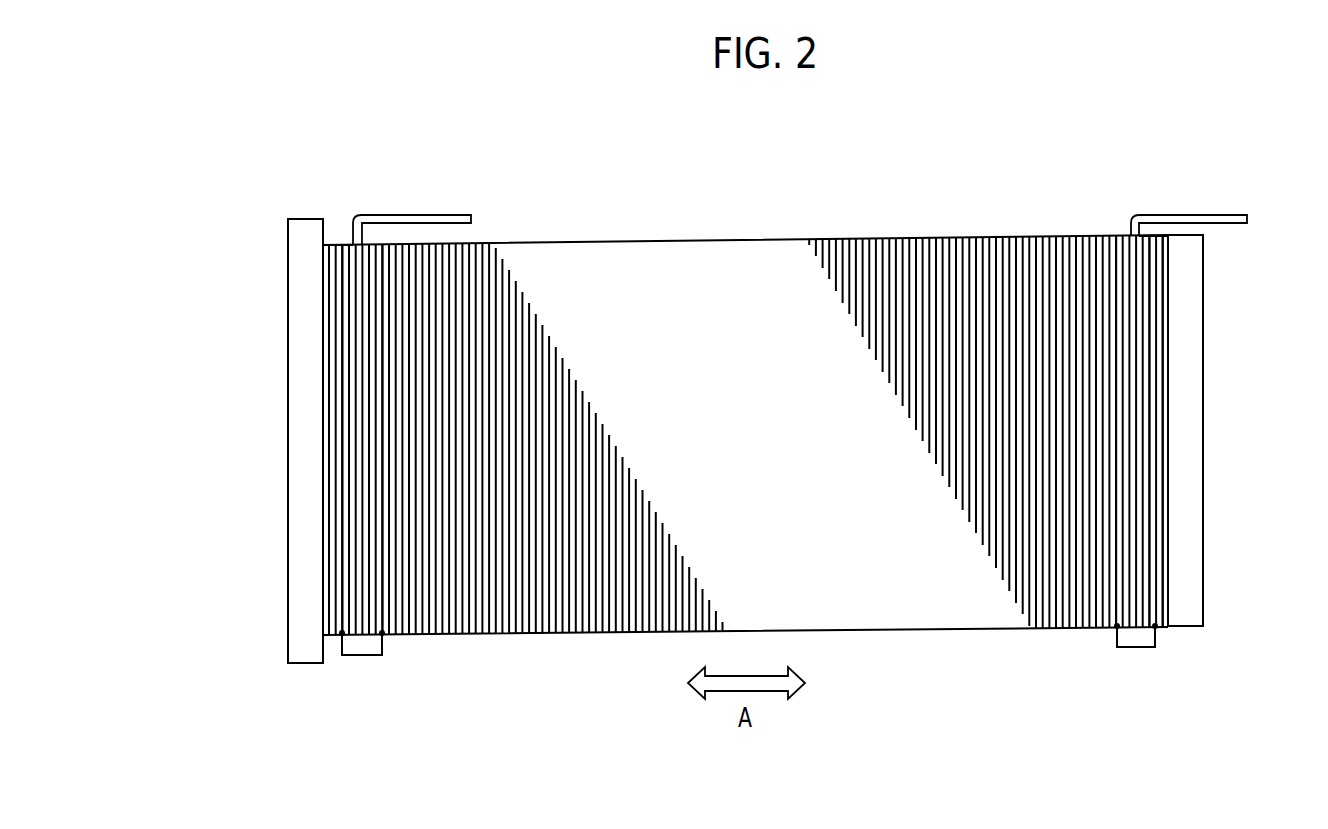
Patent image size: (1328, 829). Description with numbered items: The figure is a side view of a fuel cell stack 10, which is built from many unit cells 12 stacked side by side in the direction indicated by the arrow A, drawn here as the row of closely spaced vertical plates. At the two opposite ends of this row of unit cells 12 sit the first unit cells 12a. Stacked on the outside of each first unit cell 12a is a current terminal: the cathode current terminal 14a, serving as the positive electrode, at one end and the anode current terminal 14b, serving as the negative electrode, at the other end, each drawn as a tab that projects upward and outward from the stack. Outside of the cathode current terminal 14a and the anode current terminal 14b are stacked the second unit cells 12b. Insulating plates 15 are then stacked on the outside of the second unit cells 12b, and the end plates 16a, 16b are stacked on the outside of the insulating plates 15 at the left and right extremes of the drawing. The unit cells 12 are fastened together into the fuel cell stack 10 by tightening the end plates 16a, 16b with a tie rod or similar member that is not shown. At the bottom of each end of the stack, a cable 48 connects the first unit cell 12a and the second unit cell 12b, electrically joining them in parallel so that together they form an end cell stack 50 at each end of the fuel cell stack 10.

The fuel cell stack 10 is at (560, 84).
The unit cells 12 is at (623, 233).
The first unit cells 12a is at (380, 238).
The second unit cells 12b is at (340, 228).
The cathode current terminal 14a is at (450, 215).
The anode current terminal 14b is at (1240, 215).
The insulating plates 15 is at (327, 432).
The end plate 16a is at (268, 337).
The end plate 16b is at (1207, 322).
The cable 48 is at (362, 655).
The end cell stack 50 is at (354, 158).